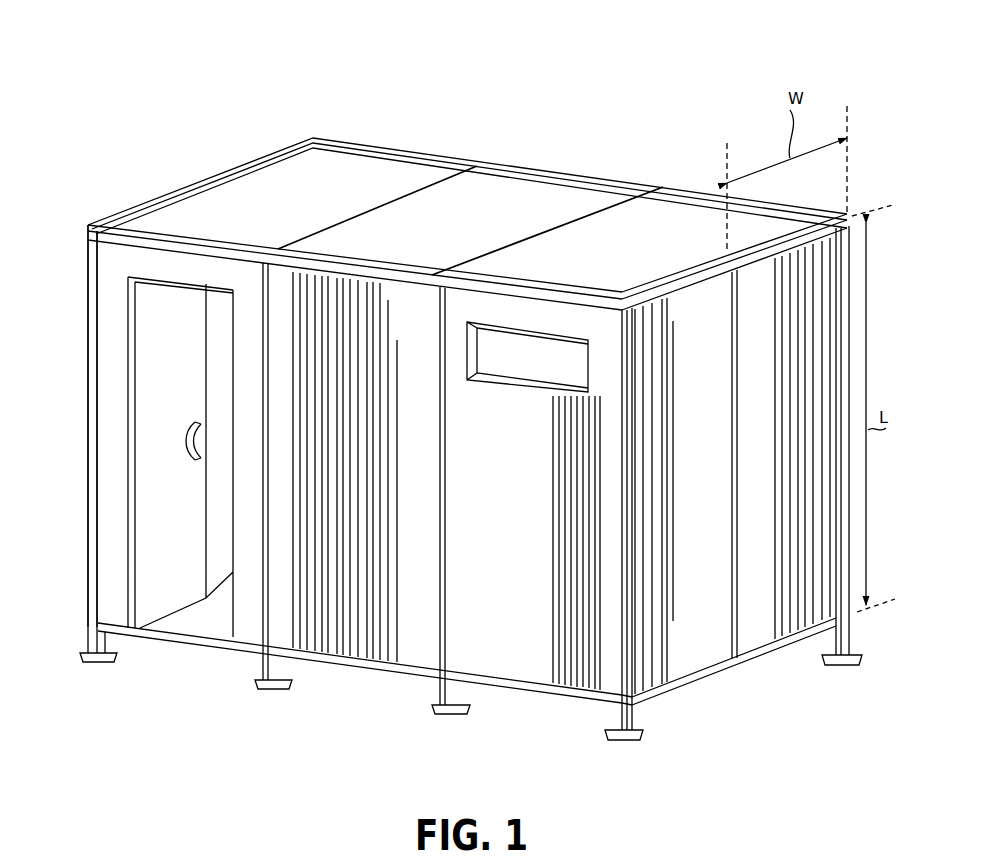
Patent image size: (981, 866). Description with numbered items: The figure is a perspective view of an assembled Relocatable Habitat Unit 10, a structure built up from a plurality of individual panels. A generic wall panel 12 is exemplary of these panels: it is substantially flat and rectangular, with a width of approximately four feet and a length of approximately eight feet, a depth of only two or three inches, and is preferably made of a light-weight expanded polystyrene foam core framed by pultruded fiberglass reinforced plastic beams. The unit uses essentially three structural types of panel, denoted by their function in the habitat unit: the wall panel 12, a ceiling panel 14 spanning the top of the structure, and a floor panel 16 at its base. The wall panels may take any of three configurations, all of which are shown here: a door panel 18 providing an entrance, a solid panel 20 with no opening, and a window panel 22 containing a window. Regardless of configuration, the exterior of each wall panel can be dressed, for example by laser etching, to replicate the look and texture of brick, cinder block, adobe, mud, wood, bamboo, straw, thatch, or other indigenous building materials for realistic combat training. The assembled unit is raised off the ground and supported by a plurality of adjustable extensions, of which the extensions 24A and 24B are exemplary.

The Relocatable Habitat Unit 10 is at (188, 110).
The wall panel 12 is at (790, 615).
The ceiling panel 14 is at (345, 185).
The floor panel 16 is at (190, 620).
The door panel 18 is at (115, 372).
The solid panel 20 is at (360, 640).
The window panel 22 is at (545, 670).
The adjustable extension 24A is at (87, 627).
The adjustable extension 24B is at (637, 705).